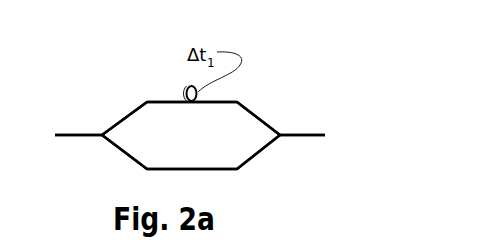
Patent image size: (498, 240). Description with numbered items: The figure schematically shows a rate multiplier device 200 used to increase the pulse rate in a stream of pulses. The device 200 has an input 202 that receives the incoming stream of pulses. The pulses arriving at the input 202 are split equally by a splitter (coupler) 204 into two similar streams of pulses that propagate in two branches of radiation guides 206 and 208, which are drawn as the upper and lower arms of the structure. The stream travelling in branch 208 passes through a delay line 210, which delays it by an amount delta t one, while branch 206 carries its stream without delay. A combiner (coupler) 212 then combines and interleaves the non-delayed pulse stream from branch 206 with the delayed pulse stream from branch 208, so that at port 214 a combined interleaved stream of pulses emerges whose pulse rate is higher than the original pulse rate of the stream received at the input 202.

The device 200 is at (336, 101).
The input 202 is at (83, 130).
The splitter (coupler) 204 is at (103, 138).
The radiation guide branch 206 is at (213, 166).
The radiation guide branch 208 is at (152, 95).
The delay line 210 is at (188, 104).
The combiner (coupler) 212 is at (286, 143).
The port 214 is at (316, 132).